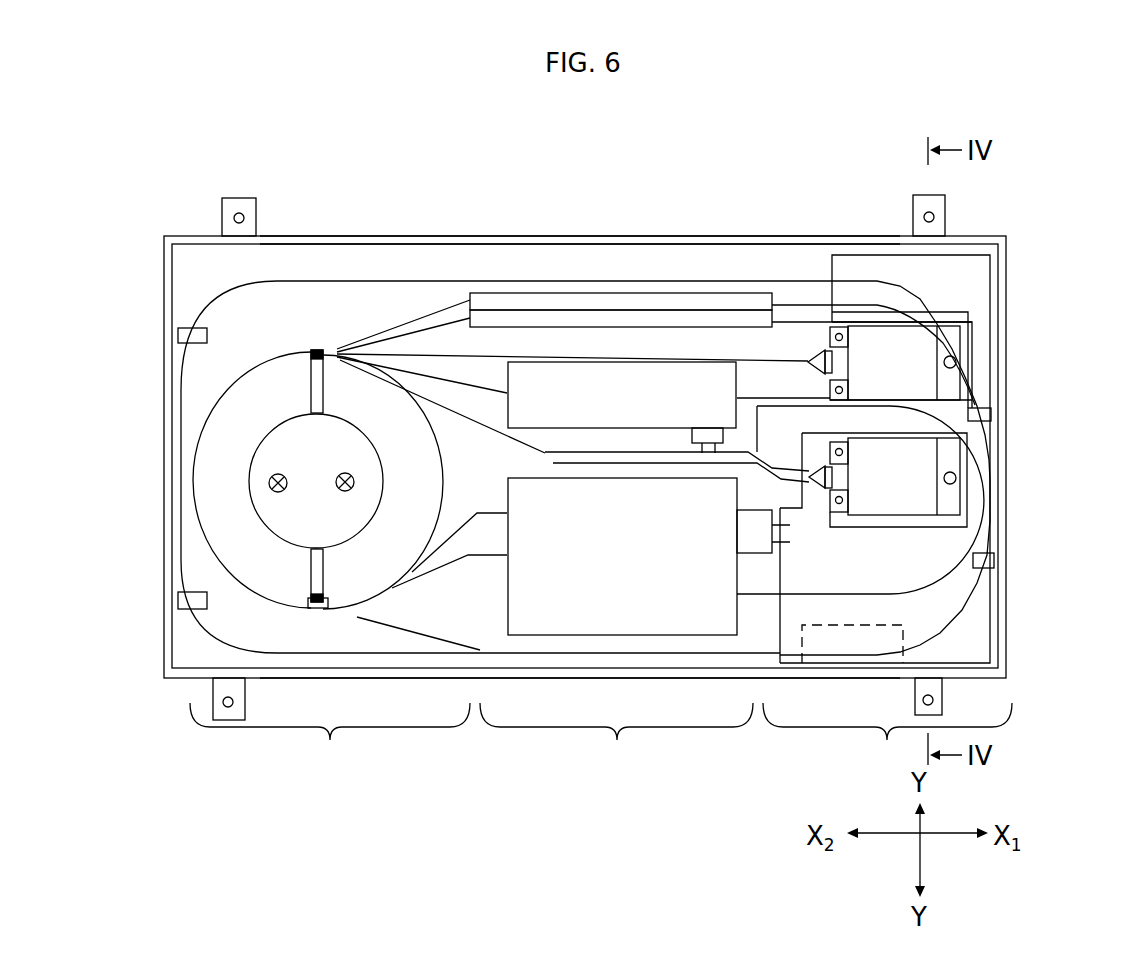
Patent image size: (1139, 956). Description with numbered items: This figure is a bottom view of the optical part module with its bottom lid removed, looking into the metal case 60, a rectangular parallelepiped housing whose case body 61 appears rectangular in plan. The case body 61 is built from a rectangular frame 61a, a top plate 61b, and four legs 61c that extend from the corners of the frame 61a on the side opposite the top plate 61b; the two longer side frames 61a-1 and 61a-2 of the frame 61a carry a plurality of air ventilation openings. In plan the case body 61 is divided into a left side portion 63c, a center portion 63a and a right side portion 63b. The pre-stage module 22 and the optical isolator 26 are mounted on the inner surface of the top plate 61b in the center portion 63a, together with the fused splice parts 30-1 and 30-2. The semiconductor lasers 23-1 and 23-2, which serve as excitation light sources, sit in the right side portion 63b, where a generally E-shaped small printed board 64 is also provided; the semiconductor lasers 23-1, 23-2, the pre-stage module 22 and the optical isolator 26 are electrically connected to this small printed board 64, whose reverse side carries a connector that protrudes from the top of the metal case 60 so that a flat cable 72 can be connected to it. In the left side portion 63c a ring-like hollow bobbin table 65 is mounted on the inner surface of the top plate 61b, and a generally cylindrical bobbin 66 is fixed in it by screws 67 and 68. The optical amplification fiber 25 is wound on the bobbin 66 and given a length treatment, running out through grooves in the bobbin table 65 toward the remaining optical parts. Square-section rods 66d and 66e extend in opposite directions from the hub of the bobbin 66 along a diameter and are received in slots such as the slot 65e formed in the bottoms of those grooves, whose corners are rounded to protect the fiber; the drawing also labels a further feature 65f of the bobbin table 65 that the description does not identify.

The metal case 60 is at (164, 263).
The case body 61 is at (161, 297).
The rectangular frame 61a is at (164, 381).
The longer side frame 61a-1 is at (803, 236).
The longer side frame 61a-2 is at (427, 680).
The top plate 61b is at (454, 264).
The legs 61c is at (224, 210).
The optical amplification fiber 25 is at (390, 307).
The fused splice part 30-1 is at (585, 305).
The fused splice part 30-2 is at (633, 320).
The optical isolator 26 is at (605, 408).
The pre-stage module 22 is at (548, 618).
The semiconductor laser 23-1 is at (930, 362).
The semiconductor laser 23-2 is at (930, 498).
The small printed board 64 is at (977, 628).
The bobbin table 65 is at (212, 480).
The slot 65e is at (315, 607).
The upper slot of reel holder 65f is at (310, 350).
The bobbin 66 is at (280, 528).
The rod 66d is at (320, 603).
The rod 66e is at (320, 347).
The screw 67 is at (272, 490).
The screw 68 is at (353, 487).
The flat cable 72 is at (822, 645).
The center portion 63a is at (616, 736).
The right side portion 63b is at (887, 737).
The left side portion 63c is at (330, 738).